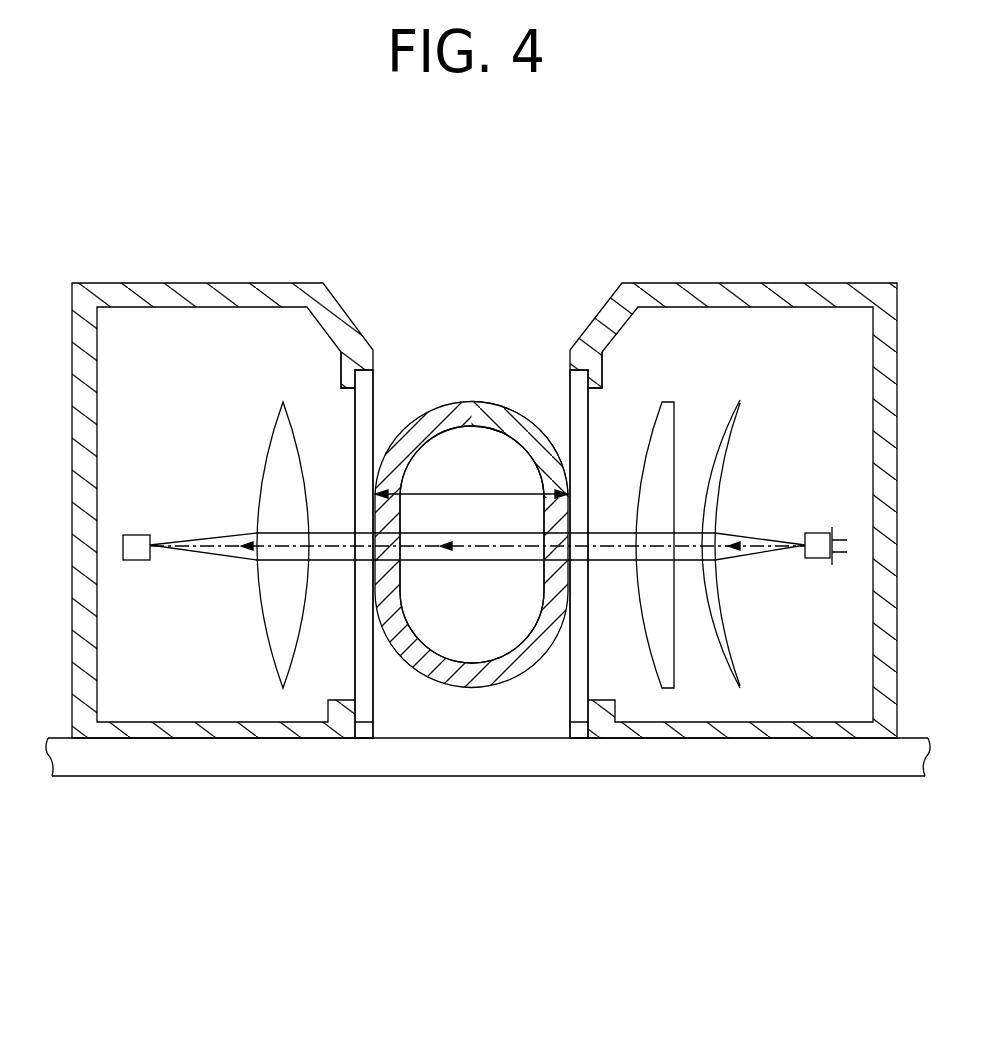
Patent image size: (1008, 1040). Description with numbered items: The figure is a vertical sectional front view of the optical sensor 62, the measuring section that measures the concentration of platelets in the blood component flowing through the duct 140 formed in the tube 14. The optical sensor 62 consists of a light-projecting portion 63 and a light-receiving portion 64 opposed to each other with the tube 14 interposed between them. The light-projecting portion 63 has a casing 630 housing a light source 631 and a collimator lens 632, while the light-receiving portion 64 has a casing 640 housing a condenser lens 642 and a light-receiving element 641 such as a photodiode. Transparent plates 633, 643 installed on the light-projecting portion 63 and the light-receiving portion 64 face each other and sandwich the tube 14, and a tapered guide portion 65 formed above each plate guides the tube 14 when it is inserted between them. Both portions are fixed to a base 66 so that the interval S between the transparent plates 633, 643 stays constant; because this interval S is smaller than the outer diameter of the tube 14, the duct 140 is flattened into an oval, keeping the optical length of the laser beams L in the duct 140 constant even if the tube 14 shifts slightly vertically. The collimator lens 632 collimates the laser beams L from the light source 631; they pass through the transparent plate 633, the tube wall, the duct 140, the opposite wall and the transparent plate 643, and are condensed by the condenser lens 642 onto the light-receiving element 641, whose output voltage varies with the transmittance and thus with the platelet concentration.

The tube 14 is at (471, 562).
The duct 140 is at (440, 628).
The optical sensor 62 is at (701, 503).
The light-projecting portion 63 is at (733, 462).
The casing 630 is at (742, 290).
The light source 631 is at (818, 552).
The collimator lens 632 is at (668, 652).
The transparent plate 633 is at (570, 380).
The light-receiving portion 64 is at (253, 528).
The casing 640 is at (237, 290).
The light-receiving element 641 is at (134, 557).
The condenser lens 642 is at (273, 637).
The transparent plate 643 is at (376, 396).
The tapered guide portion 65 is at (341, 307).
The base 66 is at (573, 760).
The laser beams L is at (493, 545).
The interval S is at (471, 480).